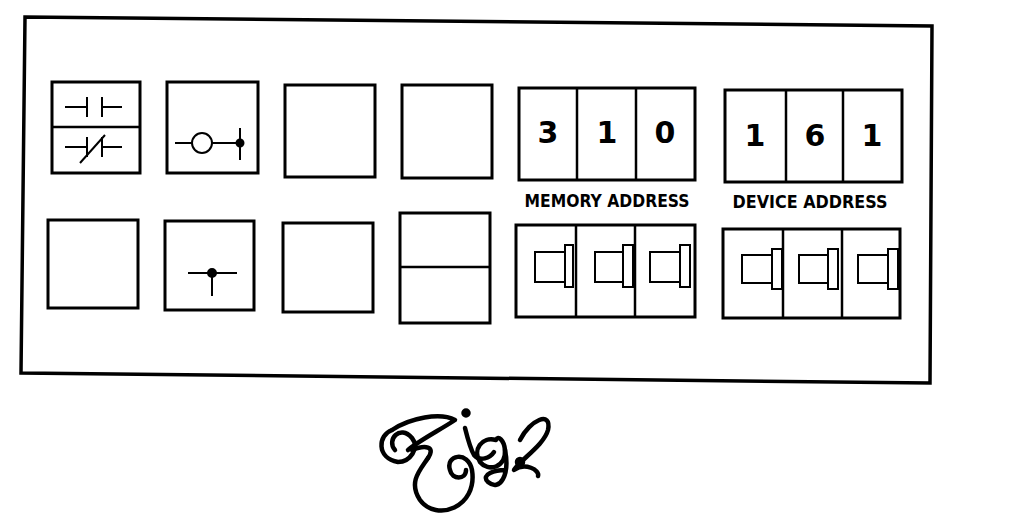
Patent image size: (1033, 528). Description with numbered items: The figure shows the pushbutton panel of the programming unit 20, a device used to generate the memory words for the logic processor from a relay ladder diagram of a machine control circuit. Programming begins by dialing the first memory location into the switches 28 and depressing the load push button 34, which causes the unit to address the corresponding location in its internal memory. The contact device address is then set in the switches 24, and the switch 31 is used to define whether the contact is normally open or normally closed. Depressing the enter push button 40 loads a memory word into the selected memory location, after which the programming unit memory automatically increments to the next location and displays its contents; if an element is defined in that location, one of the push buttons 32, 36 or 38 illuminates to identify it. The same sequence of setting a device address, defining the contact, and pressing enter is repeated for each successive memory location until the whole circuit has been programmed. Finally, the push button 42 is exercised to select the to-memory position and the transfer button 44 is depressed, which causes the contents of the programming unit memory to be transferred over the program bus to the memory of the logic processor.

The programming unit 20 is at (468, 74).
The switches 24 is at (847, 319).
The switches 28 is at (647, 318).
The switch 31 is at (101, 174).
The push button 32 is at (212, 174).
The load push button 34 is at (445, 179).
The push button 36 is at (118, 309).
The push button 38 is at (243, 311).
The enter push button 40 is at (325, 178).
The push button 42 is at (470, 325).
The transfer button 44 is at (360, 313).